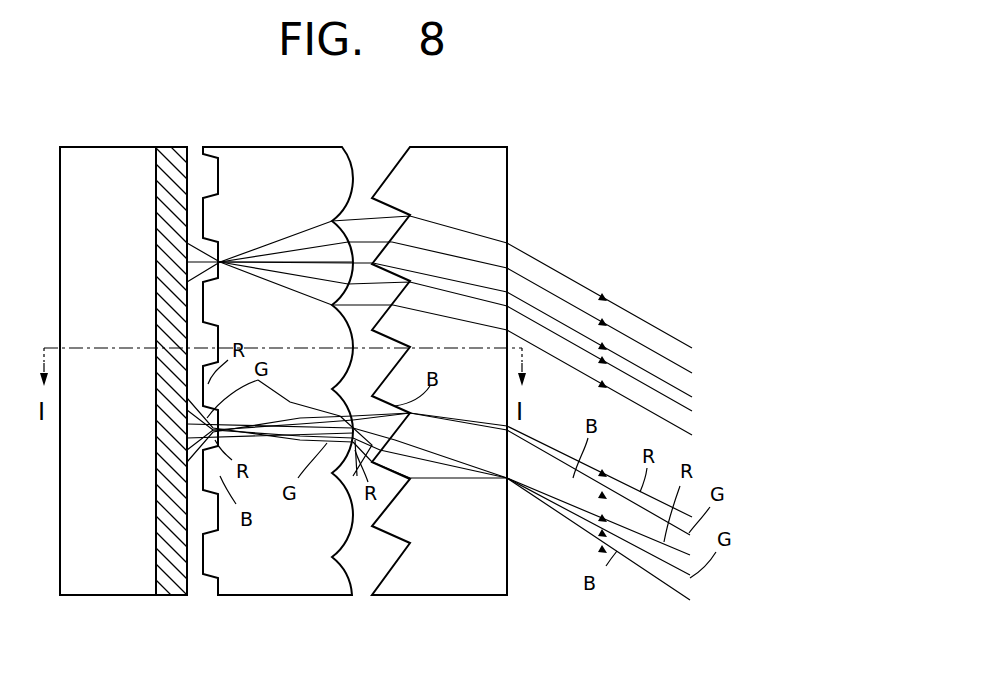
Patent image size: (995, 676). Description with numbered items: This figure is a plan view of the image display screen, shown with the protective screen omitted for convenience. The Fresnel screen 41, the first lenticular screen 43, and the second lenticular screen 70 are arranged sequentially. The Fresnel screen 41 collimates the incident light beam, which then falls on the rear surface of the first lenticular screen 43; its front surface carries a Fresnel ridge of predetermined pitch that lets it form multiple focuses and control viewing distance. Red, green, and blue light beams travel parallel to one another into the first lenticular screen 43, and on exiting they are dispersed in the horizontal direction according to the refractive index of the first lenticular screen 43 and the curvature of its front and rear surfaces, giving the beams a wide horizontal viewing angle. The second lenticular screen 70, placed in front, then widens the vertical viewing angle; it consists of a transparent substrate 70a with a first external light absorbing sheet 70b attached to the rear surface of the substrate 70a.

The second lenticular screen 70 is at (123, 359).
The transparent substrate 70a is at (91, 596).
The first external light absorbing sheet 70b is at (165, 596).
The first lenticular screen 43 is at (343, 138).
The Fresnel screen 41 is at (482, 156).